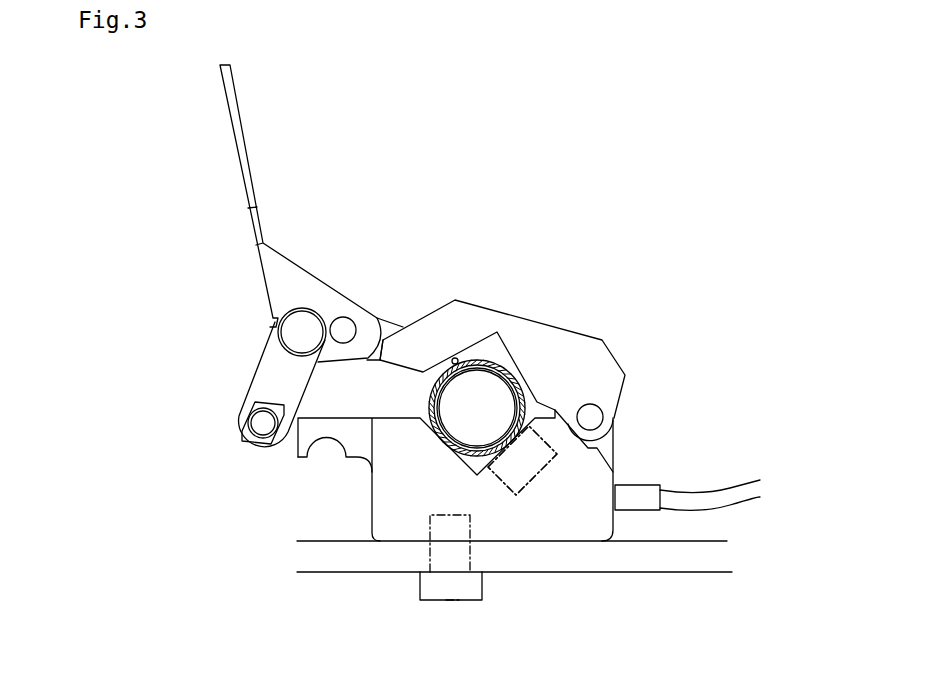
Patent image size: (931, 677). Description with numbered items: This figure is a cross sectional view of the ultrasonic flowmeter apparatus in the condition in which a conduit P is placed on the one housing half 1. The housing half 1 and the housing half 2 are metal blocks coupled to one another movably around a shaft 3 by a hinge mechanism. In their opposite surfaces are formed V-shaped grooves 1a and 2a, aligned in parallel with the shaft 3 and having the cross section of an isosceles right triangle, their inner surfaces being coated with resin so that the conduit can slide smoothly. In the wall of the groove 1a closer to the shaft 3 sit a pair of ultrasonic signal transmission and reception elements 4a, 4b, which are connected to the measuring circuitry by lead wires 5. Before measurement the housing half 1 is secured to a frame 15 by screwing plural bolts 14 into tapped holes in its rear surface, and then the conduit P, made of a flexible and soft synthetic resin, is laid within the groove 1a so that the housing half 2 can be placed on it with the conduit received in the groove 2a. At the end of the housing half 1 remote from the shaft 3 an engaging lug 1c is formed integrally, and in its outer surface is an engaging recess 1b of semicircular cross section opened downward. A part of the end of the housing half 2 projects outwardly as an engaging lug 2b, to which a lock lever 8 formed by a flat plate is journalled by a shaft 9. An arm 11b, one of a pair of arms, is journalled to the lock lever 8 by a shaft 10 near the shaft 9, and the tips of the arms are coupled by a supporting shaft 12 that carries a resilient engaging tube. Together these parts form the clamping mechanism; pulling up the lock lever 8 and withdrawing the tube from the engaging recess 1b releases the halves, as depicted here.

The housing half 1 is at (583, 528).
The V-shaped groove 1a is at (480, 475).
The engaging recess 1b is at (325, 435).
The engaging lug 1c is at (348, 422).
The housing half 2 is at (572, 342).
The V-shaped groove 2a is at (453, 358).
The engaging lug 2b is at (385, 325).
The shaft 3 is at (595, 413).
The ultrasonic signal transmission and reception element 4a is at (528, 475).
The ultrasonic signal transmission and reception element 4b is at (522, 460).
The lead wires 5 is at (725, 495).
The lock lever 8 is at (232, 108).
The shaft 9 is at (343, 320).
The shaft 10 is at (302, 320).
The arm 11b is at (262, 388).
The supporting shaft 12 is at (262, 430).
The bolt 14 is at (450, 593).
The frame 15 is at (672, 565).
The conduit P is at (497, 363).